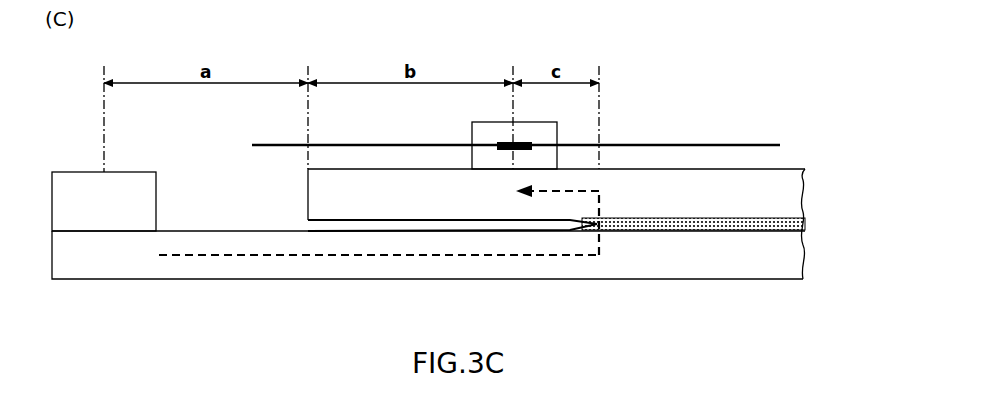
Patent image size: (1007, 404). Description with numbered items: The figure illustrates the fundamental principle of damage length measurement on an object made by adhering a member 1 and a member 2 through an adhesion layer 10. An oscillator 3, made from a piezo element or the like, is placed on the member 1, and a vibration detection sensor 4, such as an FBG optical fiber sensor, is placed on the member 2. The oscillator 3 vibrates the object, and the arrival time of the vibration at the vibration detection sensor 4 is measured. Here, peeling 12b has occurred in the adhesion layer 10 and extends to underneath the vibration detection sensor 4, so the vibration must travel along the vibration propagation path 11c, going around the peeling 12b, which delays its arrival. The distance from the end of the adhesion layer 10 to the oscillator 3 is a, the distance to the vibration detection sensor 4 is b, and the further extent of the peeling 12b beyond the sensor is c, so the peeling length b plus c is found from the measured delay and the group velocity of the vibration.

The member 1 is at (92, 279).
The member 2 is at (777, 175).
The oscillator 3 is at (78, 171).
The vibration detection sensor 4 is at (472, 131).
The adhesion layer 10 is at (657, 229).
The vibration propagation path 11c is at (287, 256).
The peeling 12b is at (470, 222).